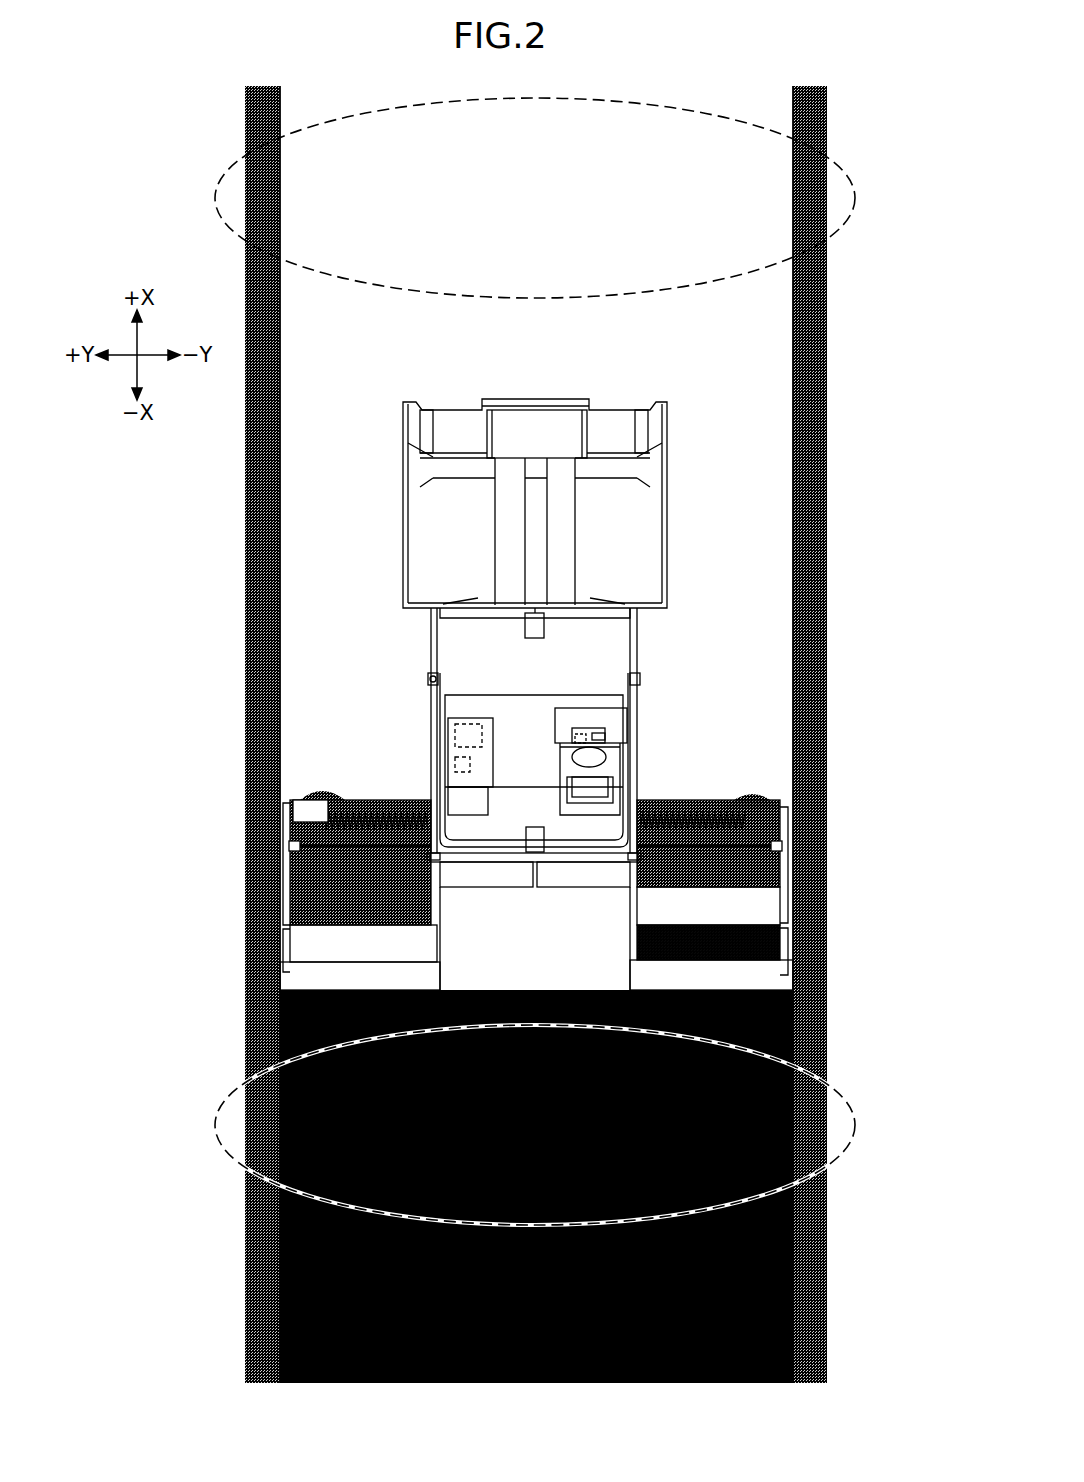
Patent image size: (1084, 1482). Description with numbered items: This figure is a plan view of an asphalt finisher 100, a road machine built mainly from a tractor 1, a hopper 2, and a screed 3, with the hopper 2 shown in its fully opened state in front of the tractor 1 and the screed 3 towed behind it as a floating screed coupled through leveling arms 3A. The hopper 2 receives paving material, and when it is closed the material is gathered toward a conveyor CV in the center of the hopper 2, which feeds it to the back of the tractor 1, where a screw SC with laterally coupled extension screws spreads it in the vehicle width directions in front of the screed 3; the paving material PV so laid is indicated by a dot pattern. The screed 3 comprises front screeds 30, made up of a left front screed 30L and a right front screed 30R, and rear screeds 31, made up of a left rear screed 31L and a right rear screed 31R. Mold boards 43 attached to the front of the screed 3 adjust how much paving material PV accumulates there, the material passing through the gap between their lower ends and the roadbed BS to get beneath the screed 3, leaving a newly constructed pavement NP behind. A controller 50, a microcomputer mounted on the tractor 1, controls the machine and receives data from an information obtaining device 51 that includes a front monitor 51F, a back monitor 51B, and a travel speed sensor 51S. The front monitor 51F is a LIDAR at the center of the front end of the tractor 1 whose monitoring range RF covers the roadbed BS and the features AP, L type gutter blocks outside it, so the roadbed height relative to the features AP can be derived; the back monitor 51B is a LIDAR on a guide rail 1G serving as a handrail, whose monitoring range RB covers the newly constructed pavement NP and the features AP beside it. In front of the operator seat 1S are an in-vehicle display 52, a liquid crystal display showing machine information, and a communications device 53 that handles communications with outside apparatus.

The tractor 1 is at (514, 753).
The operator seat 1S is at (600, 762).
The guide rail 1G is at (598, 800).
The hopper 2 is at (542, 508).
The screed 3 is at (542, 864).
The leveling arms 3A is at (432, 700).
The front screeds 30 is at (542, 858).
The left front screed 30L is at (445, 873).
The right front screed 30R is at (630, 880).
The rear screeds 31 is at (541, 937).
The left rear screed 31L is at (322, 940).
The right rear screed 31R is at (760, 905).
The mold boards 43 is at (300, 847).
The controller 50 is at (467, 715).
The information obtaining device 51 is at (438, 684).
The front monitor 51F is at (525, 628).
The travel speed sensor 51S is at (458, 765).
The back monitor 51B is at (528, 840).
The in-vehicle display 52 is at (600, 732).
The communications device 53 is at (580, 740).
The asphalt finisher 100 is at (559, 694).
The features AP is at (272, 365).
The roadbed BS is at (745, 610).
The conveyor CV is at (513, 533).
The newly constructed pavement NP is at (575, 1186).
The paving material PV is at (326, 821).
The monitoring range RB is at (855, 1110).
The monitoring range RF is at (855, 185).
The screw SC is at (722, 812).